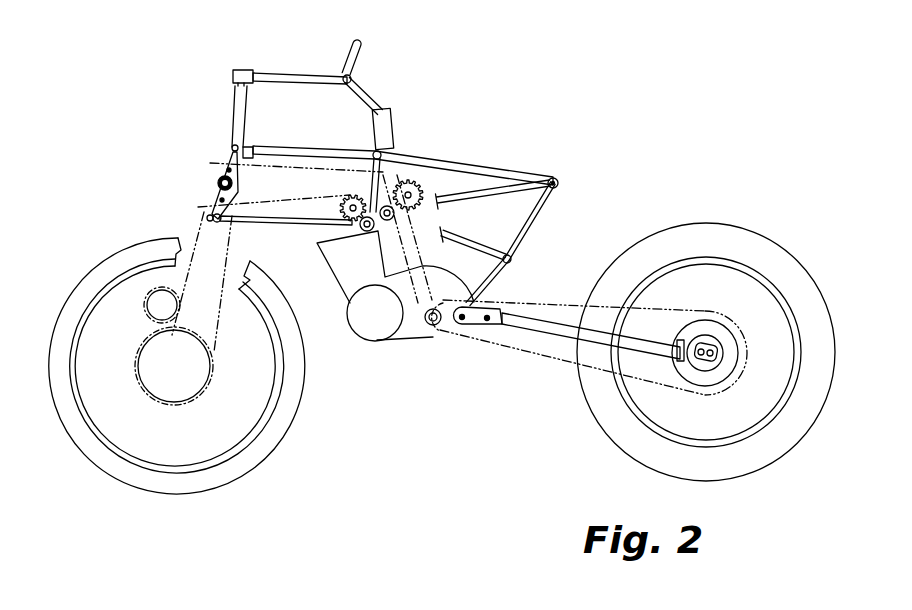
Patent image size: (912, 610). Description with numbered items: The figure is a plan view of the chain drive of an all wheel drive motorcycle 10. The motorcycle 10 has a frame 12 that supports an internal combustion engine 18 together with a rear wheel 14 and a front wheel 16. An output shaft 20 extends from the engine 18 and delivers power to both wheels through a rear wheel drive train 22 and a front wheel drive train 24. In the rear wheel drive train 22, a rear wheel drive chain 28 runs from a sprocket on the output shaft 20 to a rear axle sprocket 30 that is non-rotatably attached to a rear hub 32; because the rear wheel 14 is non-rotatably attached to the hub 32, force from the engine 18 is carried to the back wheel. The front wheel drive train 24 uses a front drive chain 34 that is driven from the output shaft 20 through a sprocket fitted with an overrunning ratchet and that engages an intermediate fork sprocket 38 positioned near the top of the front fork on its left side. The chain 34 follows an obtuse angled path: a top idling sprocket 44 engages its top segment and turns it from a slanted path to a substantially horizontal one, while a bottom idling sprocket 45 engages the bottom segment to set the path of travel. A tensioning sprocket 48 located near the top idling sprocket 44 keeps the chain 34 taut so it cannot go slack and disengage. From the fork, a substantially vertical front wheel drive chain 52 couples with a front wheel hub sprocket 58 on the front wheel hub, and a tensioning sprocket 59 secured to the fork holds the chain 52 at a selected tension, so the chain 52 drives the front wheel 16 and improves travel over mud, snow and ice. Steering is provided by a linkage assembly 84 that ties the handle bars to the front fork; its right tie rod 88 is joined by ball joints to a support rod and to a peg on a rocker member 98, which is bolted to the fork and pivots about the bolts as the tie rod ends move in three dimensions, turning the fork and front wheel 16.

The all wheel drive motorcycle 10 is at (513, 100).
The frame 12 is at (530, 170).
The rear wheel 14 is at (743, 458).
The front wheel 16 is at (255, 455).
The internal combustion engine 18 is at (396, 343).
The output shaft 20 is at (427, 325).
The rear wheel drive train 22 is at (553, 367).
The front wheel drive train 24 is at (200, 217).
The rear wheel drive chain 28 is at (528, 300).
The rear axle sprocket 30 is at (695, 377).
The rear hub 32 is at (710, 338).
The front drive chain 34 is at (413, 236).
The intermediate fork sprocket 38 is at (208, 173).
The top idling sprocket 44 is at (384, 162).
The bottom idling sprocket 45 is at (353, 224).
The tensioning sprocket 48 is at (425, 185).
The substantially vertical front wheel drive chain 52 is at (201, 235).
The front wheel hub sprocket 58 is at (170, 387).
The tensioning sprocket 59 is at (152, 305).
The linkage assembly 84 is at (317, 73).
The right tie rod 88 is at (278, 73).
The rocker member 98 is at (232, 110).